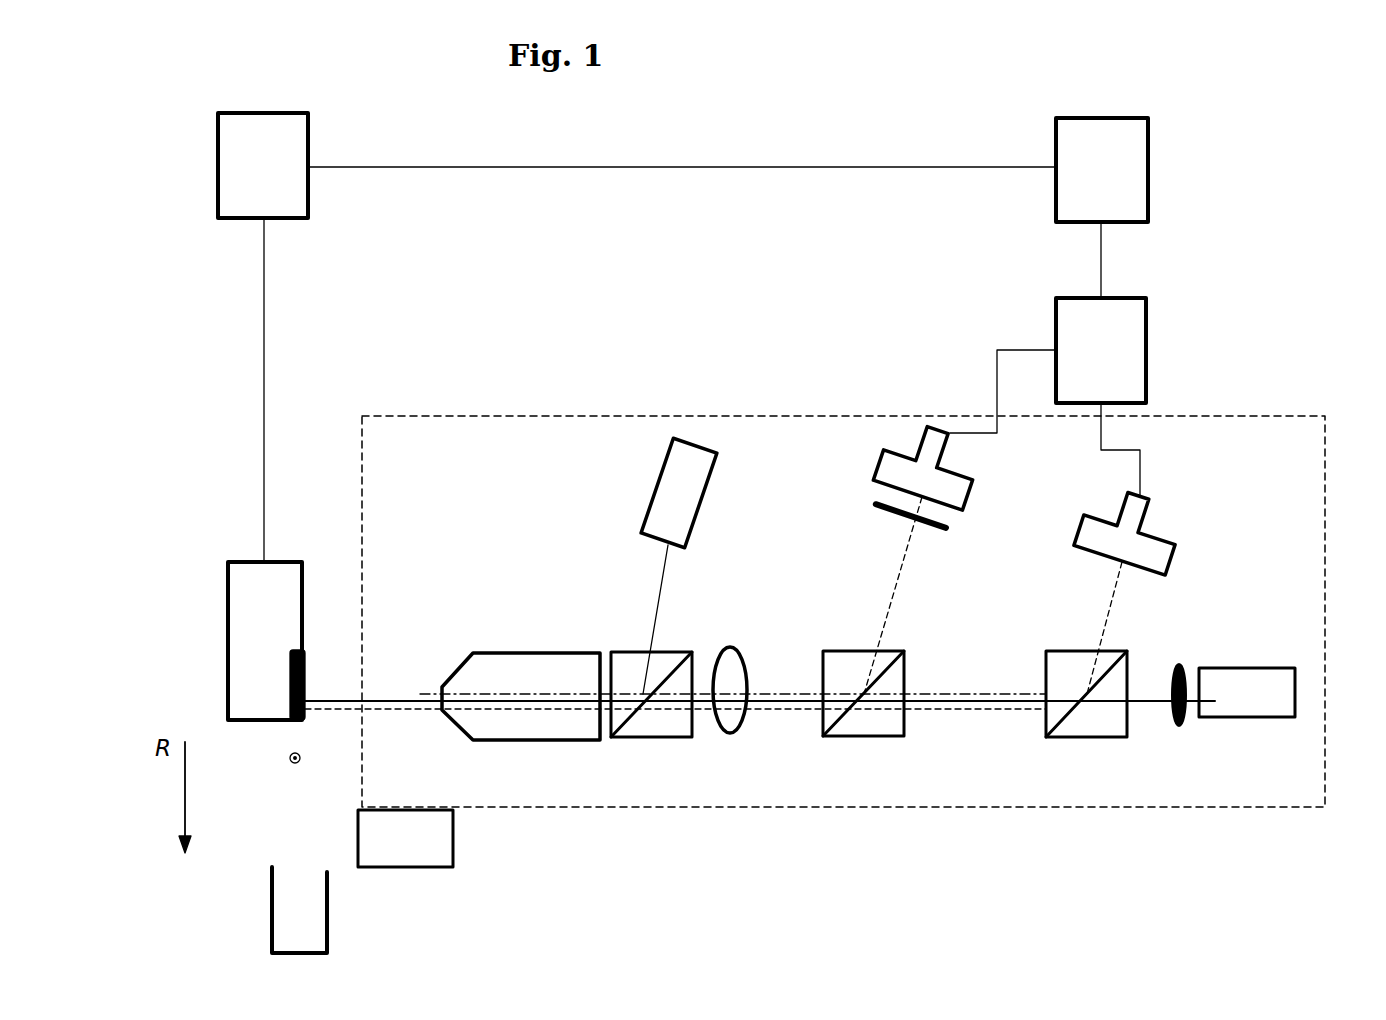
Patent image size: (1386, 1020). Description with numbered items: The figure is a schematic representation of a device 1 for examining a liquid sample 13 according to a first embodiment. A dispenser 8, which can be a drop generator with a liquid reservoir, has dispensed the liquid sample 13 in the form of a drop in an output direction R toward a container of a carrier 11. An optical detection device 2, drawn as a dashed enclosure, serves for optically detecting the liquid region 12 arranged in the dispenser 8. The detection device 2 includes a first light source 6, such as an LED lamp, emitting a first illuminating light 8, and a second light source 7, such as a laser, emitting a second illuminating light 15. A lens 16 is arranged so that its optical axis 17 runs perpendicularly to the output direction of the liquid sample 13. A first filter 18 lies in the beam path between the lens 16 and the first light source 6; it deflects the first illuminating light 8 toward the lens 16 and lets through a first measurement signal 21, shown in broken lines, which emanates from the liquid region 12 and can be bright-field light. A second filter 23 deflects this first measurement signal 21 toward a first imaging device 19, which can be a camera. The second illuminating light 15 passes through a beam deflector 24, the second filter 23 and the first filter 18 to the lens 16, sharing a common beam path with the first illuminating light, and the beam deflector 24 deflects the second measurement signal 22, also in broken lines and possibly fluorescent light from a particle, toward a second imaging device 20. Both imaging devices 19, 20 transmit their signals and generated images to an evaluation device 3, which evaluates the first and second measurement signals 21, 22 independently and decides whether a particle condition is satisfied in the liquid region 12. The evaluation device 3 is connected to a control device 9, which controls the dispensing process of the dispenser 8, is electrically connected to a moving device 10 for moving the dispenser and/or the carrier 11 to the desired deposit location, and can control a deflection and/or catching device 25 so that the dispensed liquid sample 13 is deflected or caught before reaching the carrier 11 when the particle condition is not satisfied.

The device 1 is at (1282, 150).
The detection device 2 is at (1214, 784).
The evaluation device 3 is at (1120, 328).
The first light source 6 is at (670, 490).
The second light source 7 is at (1236, 690).
The dispenser 8 is at (253, 585).
The control device 9 is at (1072, 145).
The moving device 10 is at (287, 140).
The carrier 11 is at (317, 907).
The liquid region 12 is at (272, 687).
The liquid sample 13 is at (290, 759).
The second illuminating light 15 is at (988, 695).
The lens 16 is at (513, 717).
The optical axis 17 is at (487, 695).
The first filter 18 is at (673, 715).
The first imaging device 19 is at (920, 468).
The second imaging device 20 is at (1140, 548).
The first measurement signal 21 is at (898, 570).
The second measurement signal 22 is at (1110, 600).
The second filter 23 is at (882, 710).
The beam deflector 24 is at (1102, 713).
The deflection and/or catching device 25 is at (433, 840).